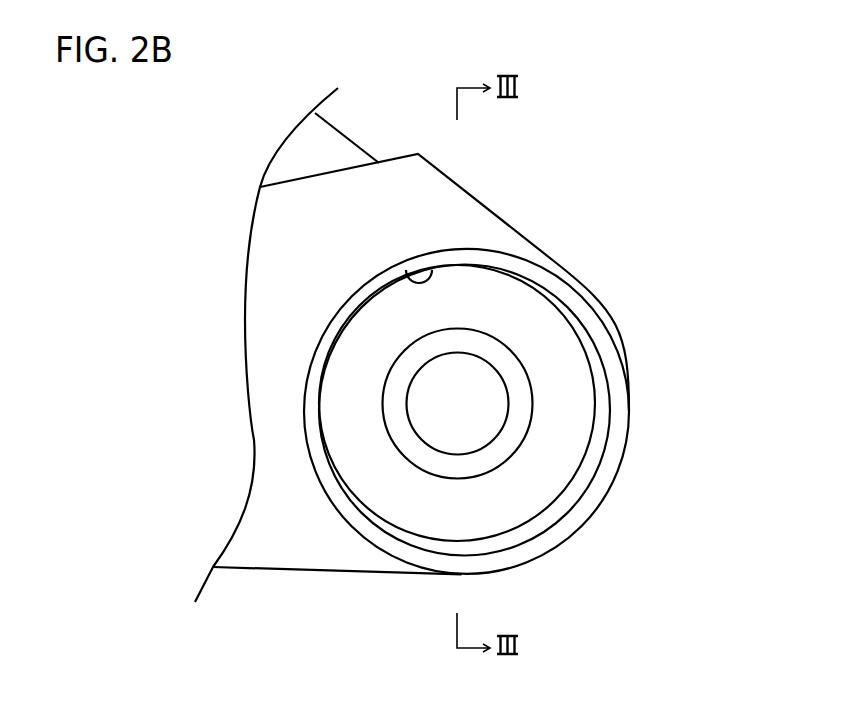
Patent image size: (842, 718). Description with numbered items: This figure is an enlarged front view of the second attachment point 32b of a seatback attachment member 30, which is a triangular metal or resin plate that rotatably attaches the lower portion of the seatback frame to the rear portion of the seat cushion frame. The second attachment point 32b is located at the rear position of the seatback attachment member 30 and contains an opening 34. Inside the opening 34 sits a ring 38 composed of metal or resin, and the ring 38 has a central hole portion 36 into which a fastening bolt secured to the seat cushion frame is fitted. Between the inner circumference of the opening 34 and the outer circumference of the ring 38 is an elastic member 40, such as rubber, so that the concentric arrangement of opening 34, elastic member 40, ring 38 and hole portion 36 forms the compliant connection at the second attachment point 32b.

The seatback attachment member 30 is at (603, 307).
The second attachment point 32b is at (507, 258).
The opening 34 is at (413, 281).
The hole portion 36 is at (458, 440).
The ring 38 is at (417, 449).
The elastic member 40 is at (383, 318).